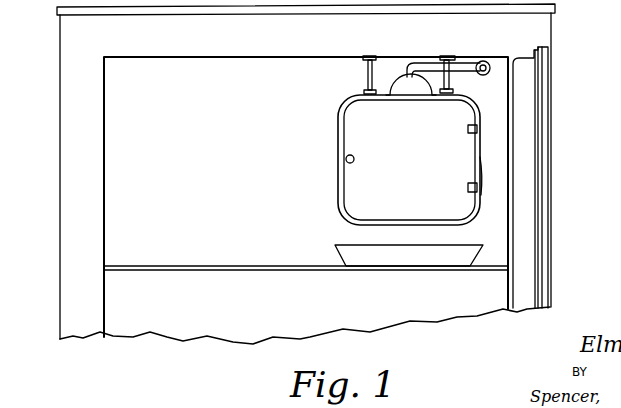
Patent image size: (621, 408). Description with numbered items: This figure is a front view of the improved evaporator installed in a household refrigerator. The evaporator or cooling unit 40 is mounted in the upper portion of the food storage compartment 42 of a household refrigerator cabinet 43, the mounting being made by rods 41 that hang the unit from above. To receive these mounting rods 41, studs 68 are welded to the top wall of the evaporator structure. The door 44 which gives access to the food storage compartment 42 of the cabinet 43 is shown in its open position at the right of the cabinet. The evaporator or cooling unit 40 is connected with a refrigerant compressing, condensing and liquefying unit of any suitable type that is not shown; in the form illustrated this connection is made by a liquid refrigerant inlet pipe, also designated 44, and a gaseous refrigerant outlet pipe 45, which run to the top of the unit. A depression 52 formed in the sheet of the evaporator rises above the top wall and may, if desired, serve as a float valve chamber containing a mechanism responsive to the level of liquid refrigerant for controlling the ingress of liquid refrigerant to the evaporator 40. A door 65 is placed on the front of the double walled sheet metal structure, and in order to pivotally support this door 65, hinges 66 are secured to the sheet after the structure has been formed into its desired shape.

The evaporator or cooling unit 40 is at (343, 132).
The mounting rods 41 is at (368, 72).
The compartment 42 is at (143, 180).
The refrigerator cabinet 43 is at (78, 100).
The door 44 is at (424, 71).
The gaseous refrigerant outlet pipe 45 is at (465, 64).
The depression 52 is at (400, 85).
The door 65 is at (341, 183).
The hinges 66 is at (478, 128).
The studs 68 is at (365, 92).